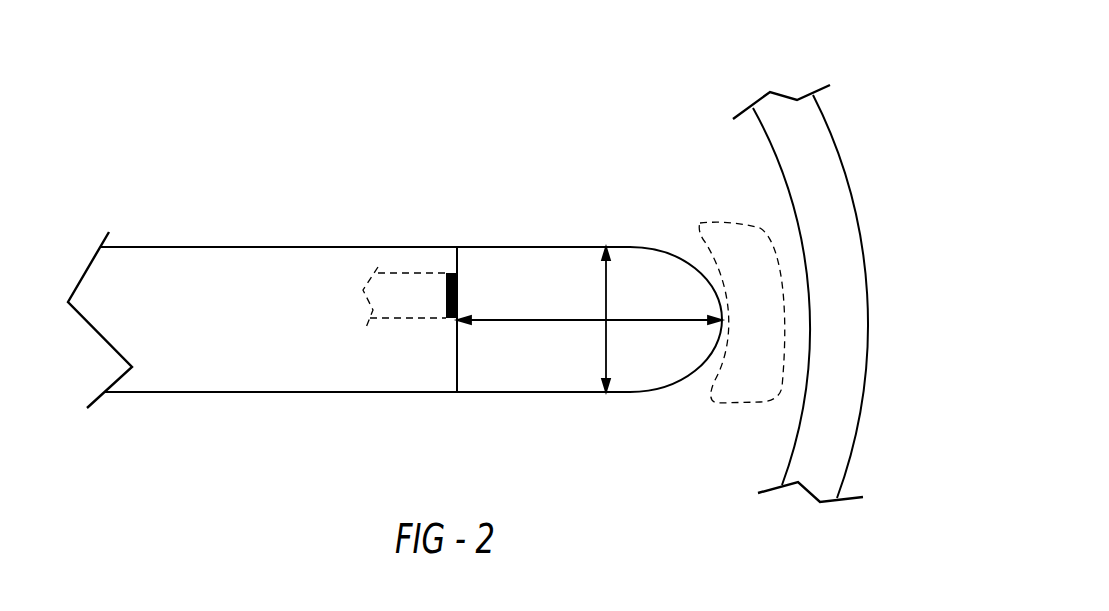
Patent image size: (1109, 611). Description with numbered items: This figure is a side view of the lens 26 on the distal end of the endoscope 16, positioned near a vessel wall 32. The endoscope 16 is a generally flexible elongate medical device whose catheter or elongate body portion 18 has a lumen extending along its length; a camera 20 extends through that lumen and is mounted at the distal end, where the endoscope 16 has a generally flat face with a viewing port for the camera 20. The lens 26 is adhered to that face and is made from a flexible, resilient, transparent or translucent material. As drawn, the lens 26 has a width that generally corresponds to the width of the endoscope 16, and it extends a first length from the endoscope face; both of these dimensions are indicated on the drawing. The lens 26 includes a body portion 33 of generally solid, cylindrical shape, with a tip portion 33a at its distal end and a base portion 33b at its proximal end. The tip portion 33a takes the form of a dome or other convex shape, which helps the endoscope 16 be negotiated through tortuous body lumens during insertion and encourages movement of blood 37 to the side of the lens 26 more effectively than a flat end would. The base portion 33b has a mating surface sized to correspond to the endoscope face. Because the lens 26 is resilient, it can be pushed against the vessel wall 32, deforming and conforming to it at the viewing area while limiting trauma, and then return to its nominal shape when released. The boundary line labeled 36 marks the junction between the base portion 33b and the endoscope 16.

The endoscope 16 is at (395, 278).
The elongate body portion 18 is at (232, 247).
The camera 20 is at (405, 273).
The lens 26 is at (577, 247).
The body portion 33 is at (545, 285).
The tip portion 33a is at (672, 255).
The base portion 33b is at (468, 247).
The shoulder 36 is at (457, 357).
The blood 37 is at (722, 222).
The vessel wall 32 is at (823, 135).